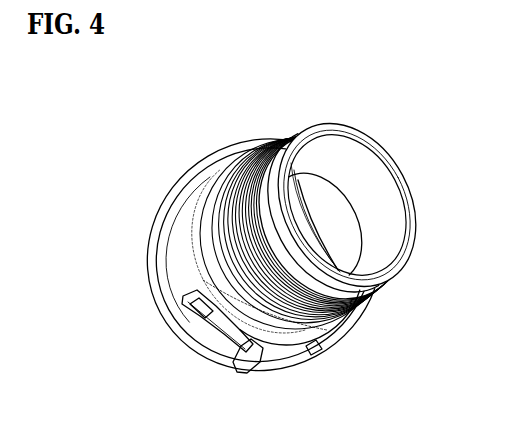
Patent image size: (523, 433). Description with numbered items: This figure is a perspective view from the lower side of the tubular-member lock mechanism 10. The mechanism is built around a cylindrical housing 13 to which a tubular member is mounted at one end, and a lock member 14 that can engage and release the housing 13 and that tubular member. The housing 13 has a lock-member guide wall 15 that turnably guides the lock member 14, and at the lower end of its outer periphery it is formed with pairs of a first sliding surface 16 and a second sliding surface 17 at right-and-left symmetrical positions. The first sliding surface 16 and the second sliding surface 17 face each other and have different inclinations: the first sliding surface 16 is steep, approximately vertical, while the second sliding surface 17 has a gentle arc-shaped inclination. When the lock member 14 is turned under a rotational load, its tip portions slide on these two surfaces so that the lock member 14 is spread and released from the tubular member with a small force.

The tubular-member lock mechanism 10 is at (273, 229).
The cylindrical housing 13 is at (250, 141).
The lock member 14 is at (212, 333).
The lock-member guide wall 15 is at (183, 178).
The first sliding surface 16 is at (216, 364).
The second sliding surface 17 is at (188, 306).